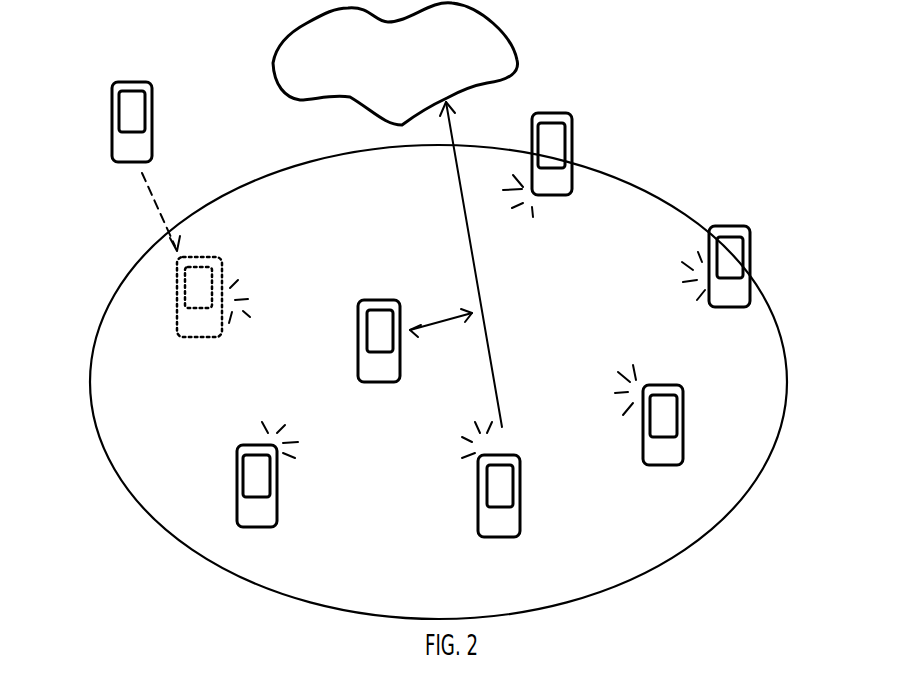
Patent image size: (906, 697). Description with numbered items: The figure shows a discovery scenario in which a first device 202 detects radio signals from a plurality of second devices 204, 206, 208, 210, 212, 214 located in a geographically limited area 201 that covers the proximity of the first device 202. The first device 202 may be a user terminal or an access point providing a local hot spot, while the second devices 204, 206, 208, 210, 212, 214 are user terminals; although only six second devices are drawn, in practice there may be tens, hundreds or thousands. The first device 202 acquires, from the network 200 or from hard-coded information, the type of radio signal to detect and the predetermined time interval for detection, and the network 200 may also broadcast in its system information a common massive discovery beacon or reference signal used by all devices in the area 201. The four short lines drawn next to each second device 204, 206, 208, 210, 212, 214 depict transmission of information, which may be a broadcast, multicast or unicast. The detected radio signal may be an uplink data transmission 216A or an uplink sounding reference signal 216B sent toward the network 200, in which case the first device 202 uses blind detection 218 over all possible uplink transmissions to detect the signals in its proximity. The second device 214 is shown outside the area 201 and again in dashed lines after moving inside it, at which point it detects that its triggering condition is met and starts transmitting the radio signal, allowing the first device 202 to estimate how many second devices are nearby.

The network 200 is at (395, 64).
The geographically limited area 201 is at (758, 473).
The first device 202 is at (383, 382).
The second device 204 is at (572, 122).
The second device 206 is at (750, 233).
The second device 208 is at (683, 392).
The second device 210 is at (520, 462).
The second device 212 is at (237, 465).
The second device 214 is at (112, 150).
The uplink data transmission 216A is at (513, 264).
The uplink sounding reference signal 216B is at (492, 355).
The blind detection 218 is at (450, 318).